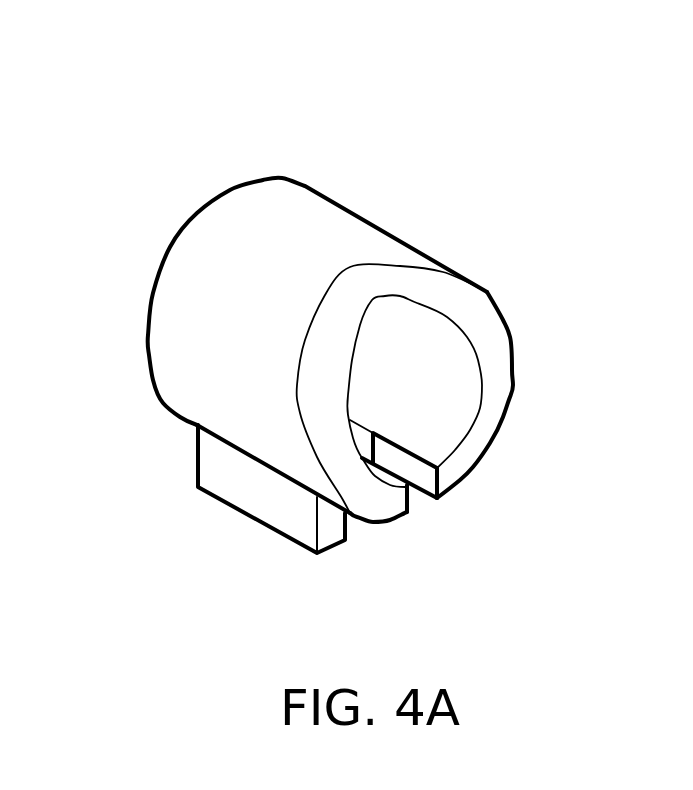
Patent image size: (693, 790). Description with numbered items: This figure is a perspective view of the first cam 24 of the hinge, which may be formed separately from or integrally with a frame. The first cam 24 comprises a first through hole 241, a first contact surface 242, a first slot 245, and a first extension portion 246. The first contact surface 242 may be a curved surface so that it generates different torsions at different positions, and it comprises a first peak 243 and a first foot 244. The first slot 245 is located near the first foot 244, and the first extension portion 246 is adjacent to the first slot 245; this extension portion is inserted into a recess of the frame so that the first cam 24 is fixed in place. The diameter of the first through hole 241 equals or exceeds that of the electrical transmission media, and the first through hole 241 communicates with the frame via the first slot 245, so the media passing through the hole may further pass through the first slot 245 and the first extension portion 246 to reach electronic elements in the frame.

The first cam 24 is at (87, 66).
The first through hole 241 is at (423, 433).
The first contact surface 242 is at (467, 312).
The first peak 243 is at (327, 395).
The first foot 244 is at (370, 300).
The first slot 245 is at (415, 502).
The first extension portion 246 is at (327, 523).